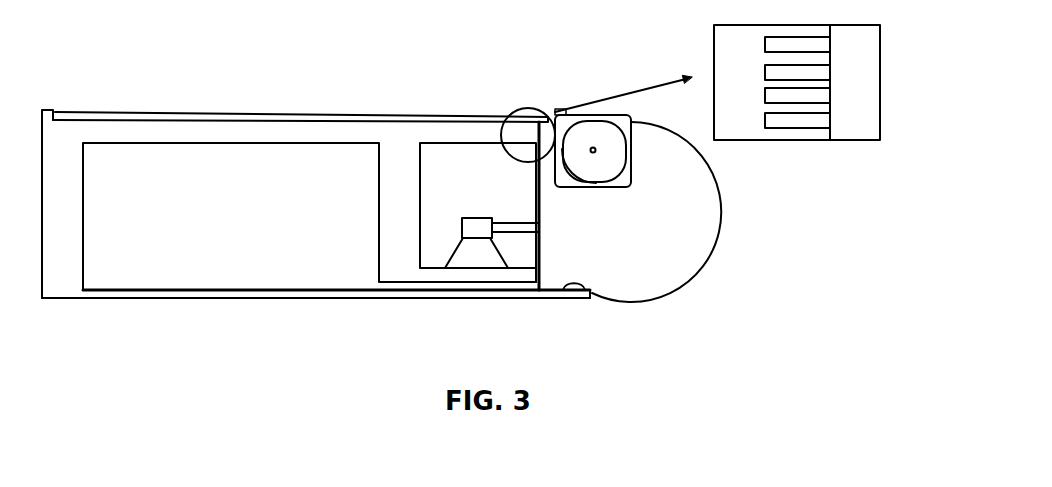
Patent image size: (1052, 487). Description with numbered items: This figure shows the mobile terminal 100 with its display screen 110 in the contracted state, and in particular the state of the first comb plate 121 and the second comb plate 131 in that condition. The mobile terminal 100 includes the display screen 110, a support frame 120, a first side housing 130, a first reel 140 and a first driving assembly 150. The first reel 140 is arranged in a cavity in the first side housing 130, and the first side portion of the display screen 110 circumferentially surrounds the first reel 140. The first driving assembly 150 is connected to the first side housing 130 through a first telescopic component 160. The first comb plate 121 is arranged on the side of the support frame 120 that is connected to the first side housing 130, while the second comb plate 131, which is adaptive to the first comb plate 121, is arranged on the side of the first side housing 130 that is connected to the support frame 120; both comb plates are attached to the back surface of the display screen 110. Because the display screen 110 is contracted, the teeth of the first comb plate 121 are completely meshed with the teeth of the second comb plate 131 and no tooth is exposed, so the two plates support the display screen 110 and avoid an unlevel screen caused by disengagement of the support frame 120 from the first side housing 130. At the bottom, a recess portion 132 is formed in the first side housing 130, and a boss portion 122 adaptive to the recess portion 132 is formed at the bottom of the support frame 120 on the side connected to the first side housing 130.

The mobile terminal 100 is at (54, 112).
The display screen 110 is at (355, 123).
The support frame 120 is at (133, 133).
The first comb plate 121 is at (740, 50).
The boss portion 122 is at (543, 295).
The first side housing 130 is at (647, 256).
The second comb plate 131 is at (857, 65).
The recess portion 132 is at (587, 291).
The first reel 140 is at (590, 172).
The first driving assembly 150 is at (473, 232).
The first telescopic component 160 is at (513, 232).